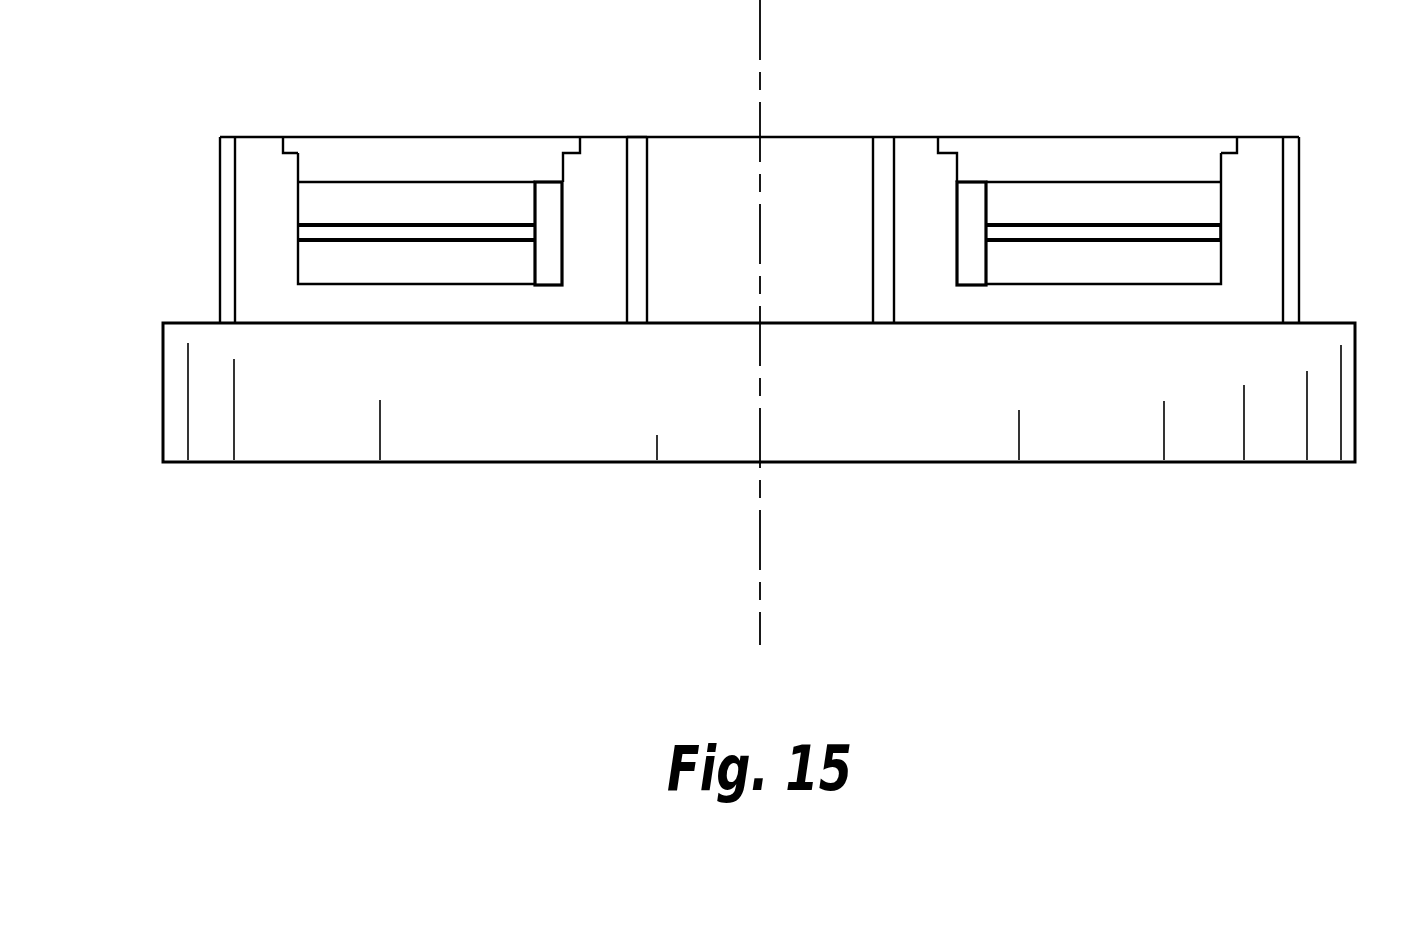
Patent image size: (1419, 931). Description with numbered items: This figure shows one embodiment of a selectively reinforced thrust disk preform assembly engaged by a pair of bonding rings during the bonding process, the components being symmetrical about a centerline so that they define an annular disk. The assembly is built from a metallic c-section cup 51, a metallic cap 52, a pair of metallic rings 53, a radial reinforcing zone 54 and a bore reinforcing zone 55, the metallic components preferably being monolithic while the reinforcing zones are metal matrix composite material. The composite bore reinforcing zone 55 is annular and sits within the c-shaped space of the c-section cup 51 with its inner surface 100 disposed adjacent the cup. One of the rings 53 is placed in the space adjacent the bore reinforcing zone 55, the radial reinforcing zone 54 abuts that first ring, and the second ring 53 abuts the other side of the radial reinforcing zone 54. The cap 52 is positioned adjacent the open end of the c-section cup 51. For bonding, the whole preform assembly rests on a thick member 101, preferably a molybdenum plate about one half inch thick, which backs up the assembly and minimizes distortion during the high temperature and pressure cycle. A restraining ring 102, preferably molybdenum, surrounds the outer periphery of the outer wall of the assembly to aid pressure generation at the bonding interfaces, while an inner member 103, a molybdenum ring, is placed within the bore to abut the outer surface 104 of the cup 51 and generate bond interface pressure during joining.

The metallic c-section cup 51 is at (253, 177).
The metallic cap 52 is at (382, 168).
The metallic rings 53 is at (348, 200).
The radial reinforcing zone 54 is at (305, 232).
The bore reinforcing zone 55 is at (542, 222).
The inner surface 100 is at (563, 212).
The thick member 101 is at (898, 427).
The restraining ring 102 is at (228, 292).
The inner member 103 is at (885, 147).
The outer surface 104 is at (628, 160).